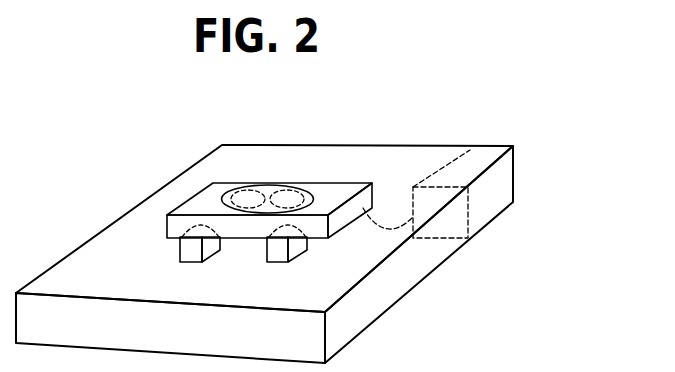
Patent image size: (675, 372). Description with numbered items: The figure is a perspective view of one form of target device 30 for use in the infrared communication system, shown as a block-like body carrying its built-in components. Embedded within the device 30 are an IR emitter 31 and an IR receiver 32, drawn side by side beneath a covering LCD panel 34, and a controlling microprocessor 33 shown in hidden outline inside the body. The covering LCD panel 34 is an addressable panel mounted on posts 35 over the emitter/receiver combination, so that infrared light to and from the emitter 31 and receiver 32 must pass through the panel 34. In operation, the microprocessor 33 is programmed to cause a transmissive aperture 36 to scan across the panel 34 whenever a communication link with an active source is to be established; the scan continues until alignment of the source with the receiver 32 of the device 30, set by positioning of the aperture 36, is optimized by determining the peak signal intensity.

The target device 30 is at (546, 202).
The IR emitter 31 is at (230, 187).
The IR receiver 32 is at (305, 190).
The controlling microprocessor 33 is at (472, 165).
The covering LCD panel 34 is at (168, 225).
The posts 35 is at (277, 258).
The transmissive aperture 36 is at (265, 185).